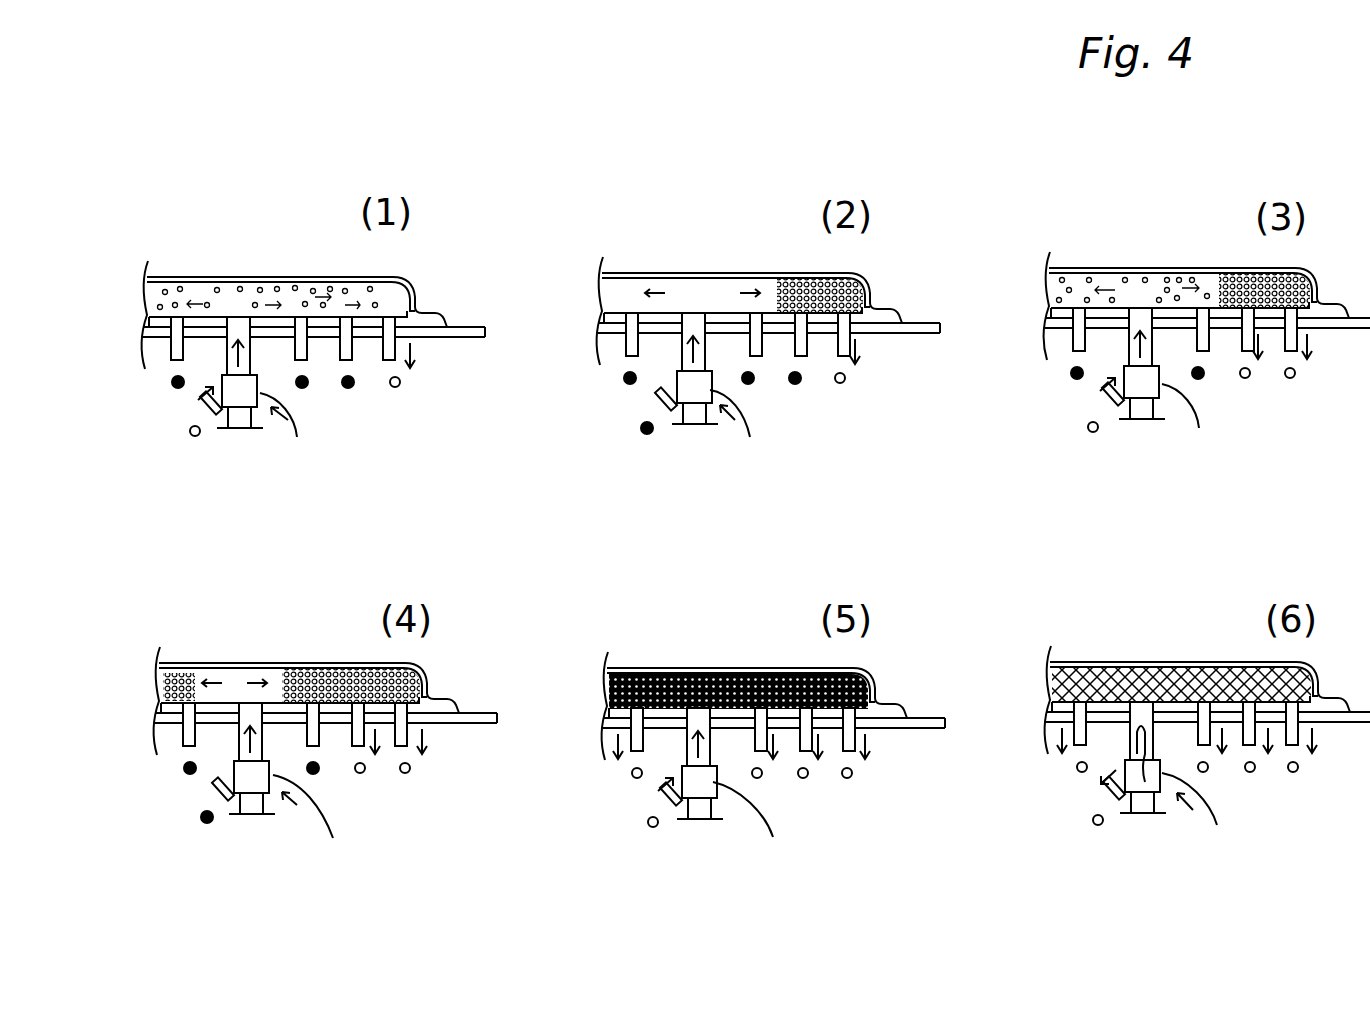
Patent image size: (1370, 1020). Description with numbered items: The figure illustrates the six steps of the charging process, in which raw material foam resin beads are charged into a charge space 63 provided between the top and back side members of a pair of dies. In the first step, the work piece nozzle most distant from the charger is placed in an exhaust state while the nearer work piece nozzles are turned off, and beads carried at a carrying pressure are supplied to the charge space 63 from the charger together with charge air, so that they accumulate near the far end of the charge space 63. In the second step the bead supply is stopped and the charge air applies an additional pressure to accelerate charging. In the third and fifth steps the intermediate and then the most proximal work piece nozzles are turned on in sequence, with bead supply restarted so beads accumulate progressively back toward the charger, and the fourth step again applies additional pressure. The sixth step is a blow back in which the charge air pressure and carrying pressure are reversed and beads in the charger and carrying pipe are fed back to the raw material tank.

The charge space 63 is at (297, 267).